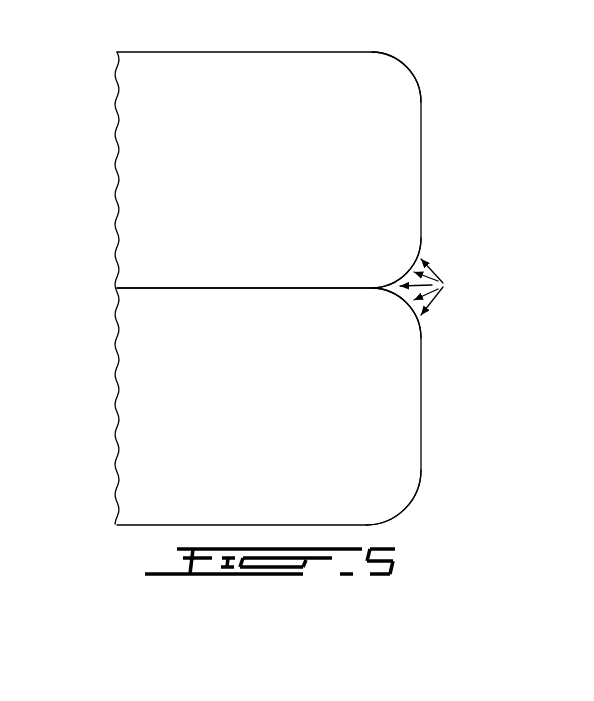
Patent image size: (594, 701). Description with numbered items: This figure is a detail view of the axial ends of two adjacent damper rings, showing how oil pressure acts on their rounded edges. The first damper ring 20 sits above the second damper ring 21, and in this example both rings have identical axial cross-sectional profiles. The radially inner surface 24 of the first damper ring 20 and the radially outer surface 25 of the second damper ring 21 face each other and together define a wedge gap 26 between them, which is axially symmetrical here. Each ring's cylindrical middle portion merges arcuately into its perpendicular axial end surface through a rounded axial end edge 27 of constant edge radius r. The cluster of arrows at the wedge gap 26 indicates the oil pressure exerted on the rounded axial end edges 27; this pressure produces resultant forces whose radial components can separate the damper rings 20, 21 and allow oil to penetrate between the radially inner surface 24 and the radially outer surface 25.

The first damper ring 20 is at (186, 139).
The second damper ring 21 is at (186, 499).
The radially inner surface 24 is at (205, 288).
The radially outer surface 25 is at (175, 288).
The wedge gap 26 is at (448, 285).
The axial end edge 27 is at (403, 70).